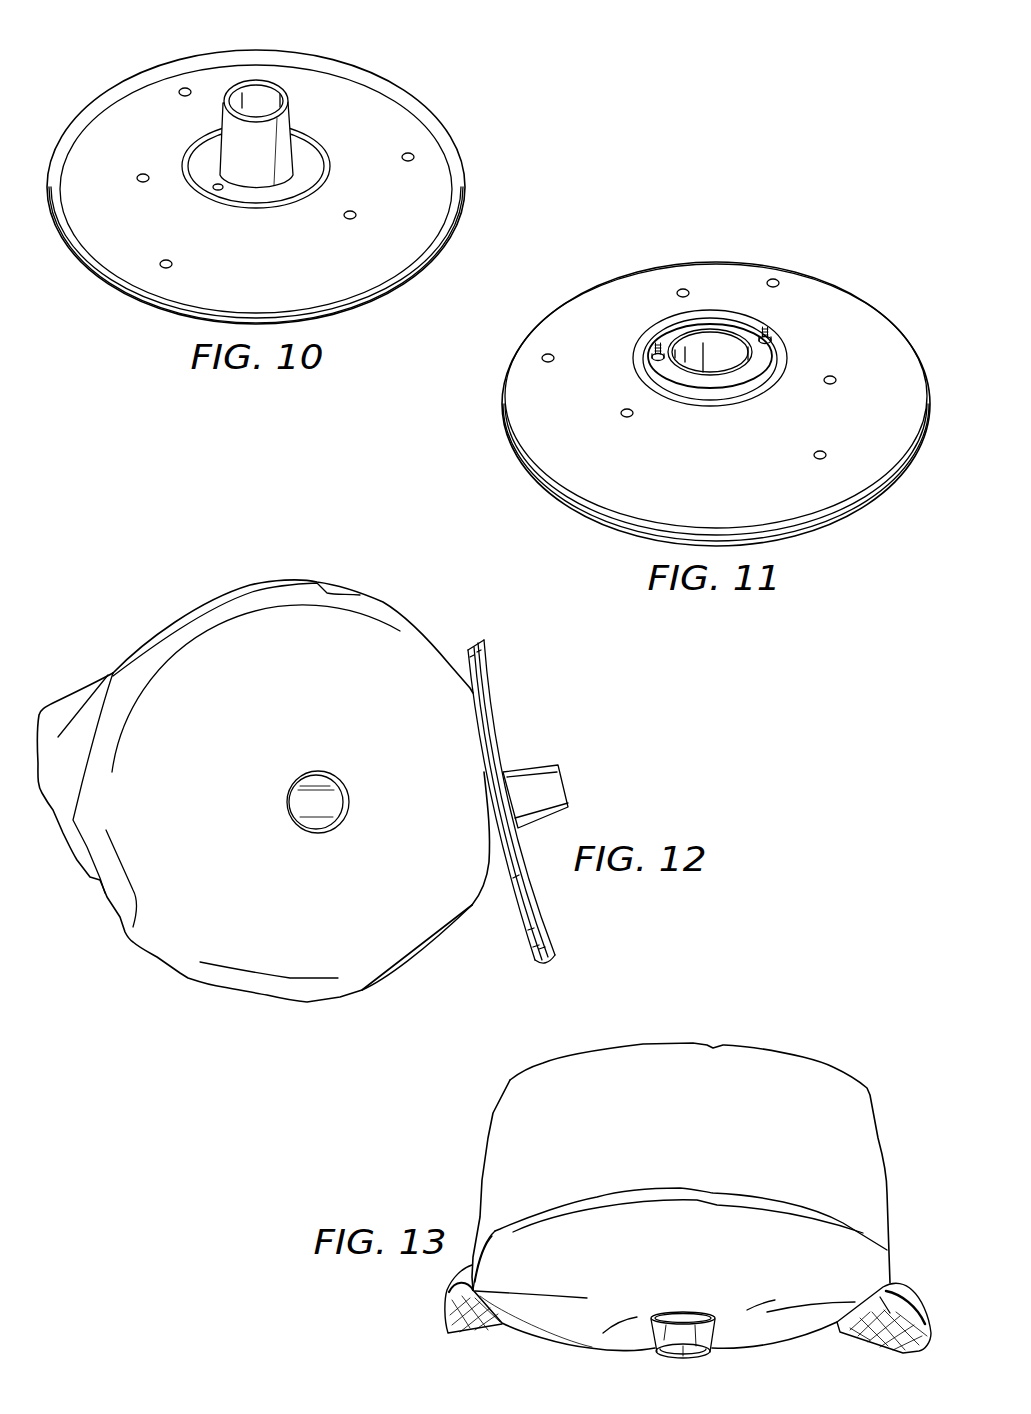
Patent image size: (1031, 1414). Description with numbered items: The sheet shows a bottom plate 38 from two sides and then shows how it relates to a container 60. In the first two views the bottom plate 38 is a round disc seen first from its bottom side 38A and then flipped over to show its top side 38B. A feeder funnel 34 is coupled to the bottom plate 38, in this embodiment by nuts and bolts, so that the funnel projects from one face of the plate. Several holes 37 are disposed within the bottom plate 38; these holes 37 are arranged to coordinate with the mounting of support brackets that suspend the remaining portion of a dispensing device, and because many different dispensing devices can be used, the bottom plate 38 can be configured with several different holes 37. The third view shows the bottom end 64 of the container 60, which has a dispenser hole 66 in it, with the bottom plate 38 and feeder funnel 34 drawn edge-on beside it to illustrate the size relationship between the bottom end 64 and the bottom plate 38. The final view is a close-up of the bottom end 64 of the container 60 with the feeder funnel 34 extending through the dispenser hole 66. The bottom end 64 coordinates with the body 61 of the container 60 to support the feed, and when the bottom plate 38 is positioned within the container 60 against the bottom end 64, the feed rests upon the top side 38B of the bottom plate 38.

In FIG. 10, the feeder funnel 34 is at (256, 90).
In FIG. 11, the feeder funnel 34 is at (776, 362).
In FIG. 12, the feeder funnel 34 is at (568, 790).
In FIG. 13, the feeder funnel 34 is at (678, 1324).
In FIG. 10, the holes 37 is at (178, 94).
In FIG. 11, the holes 37 is at (775, 278).
In FIG. 10, the bottom plate 38 is at (497, 165).
In FIG. 11, the bottom plate 38 is at (850, 254).
In FIG. 12, the bottom plate 38 is at (511, 926).
In FIG. 10, the bottom side 38A is at (252, 268).
In FIG. 11, the top side 38B is at (691, 478).
In FIG. 12, the container 60 is at (160, 591).
In FIG. 13, the container 60 is at (777, 1018).
In FIG. 13, the body 61 is at (496, 1158).
In FIG. 12, the bottom end 64 is at (410, 649).
In FIG. 13, the bottom end 64 is at (545, 1323).
In FIG. 12, the dispenser hole 66 is at (342, 806).